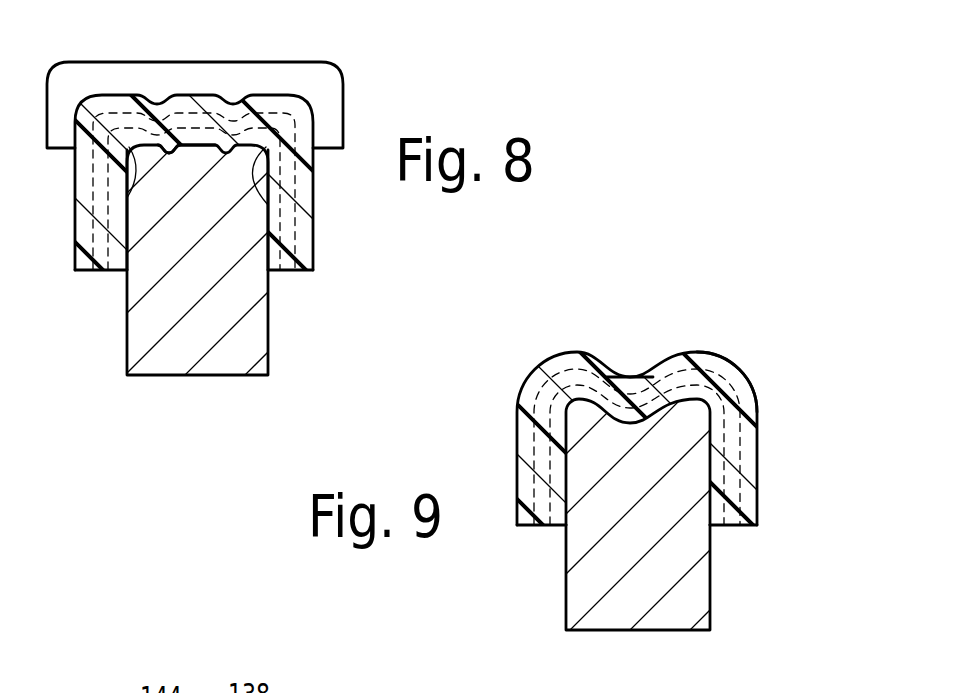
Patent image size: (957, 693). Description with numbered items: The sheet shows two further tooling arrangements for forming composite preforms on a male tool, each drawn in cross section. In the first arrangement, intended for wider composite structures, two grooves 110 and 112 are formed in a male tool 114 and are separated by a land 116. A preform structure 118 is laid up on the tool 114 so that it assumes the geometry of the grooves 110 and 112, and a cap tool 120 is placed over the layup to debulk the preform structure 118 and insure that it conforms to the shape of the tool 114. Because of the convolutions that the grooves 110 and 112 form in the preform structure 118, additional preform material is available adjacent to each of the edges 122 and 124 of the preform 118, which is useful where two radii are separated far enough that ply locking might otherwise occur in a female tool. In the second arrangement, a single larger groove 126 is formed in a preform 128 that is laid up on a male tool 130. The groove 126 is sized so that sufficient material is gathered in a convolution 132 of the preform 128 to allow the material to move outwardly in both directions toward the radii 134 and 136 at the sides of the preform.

In FIG. 8, the groove 110 is at (170, 142).
In FIG. 8, the groove 112 is at (207, 118).
In FIG. 8, the male tool 114 is at (160, 357).
In FIG. 8, the land 116 is at (200, 133).
In FIG. 8, the preform structure 118 is at (100, 162).
In FIG. 8, the cap tool 120 is at (325, 78).
In FIG. 8, the edge 122 is at (93, 263).
In FIG. 8, the edge 124 is at (248, 188).
In FIG. 9, the groove 126 is at (621, 392).
In FIG. 9, the preform 128 is at (716, 364).
In FIG. 9, the male tool 130 is at (588, 597).
In FIG. 9, the convolution 132 is at (637, 382).
In FIG. 9, the radius 134 is at (563, 352).
In FIG. 9, the radius 136 is at (750, 384).